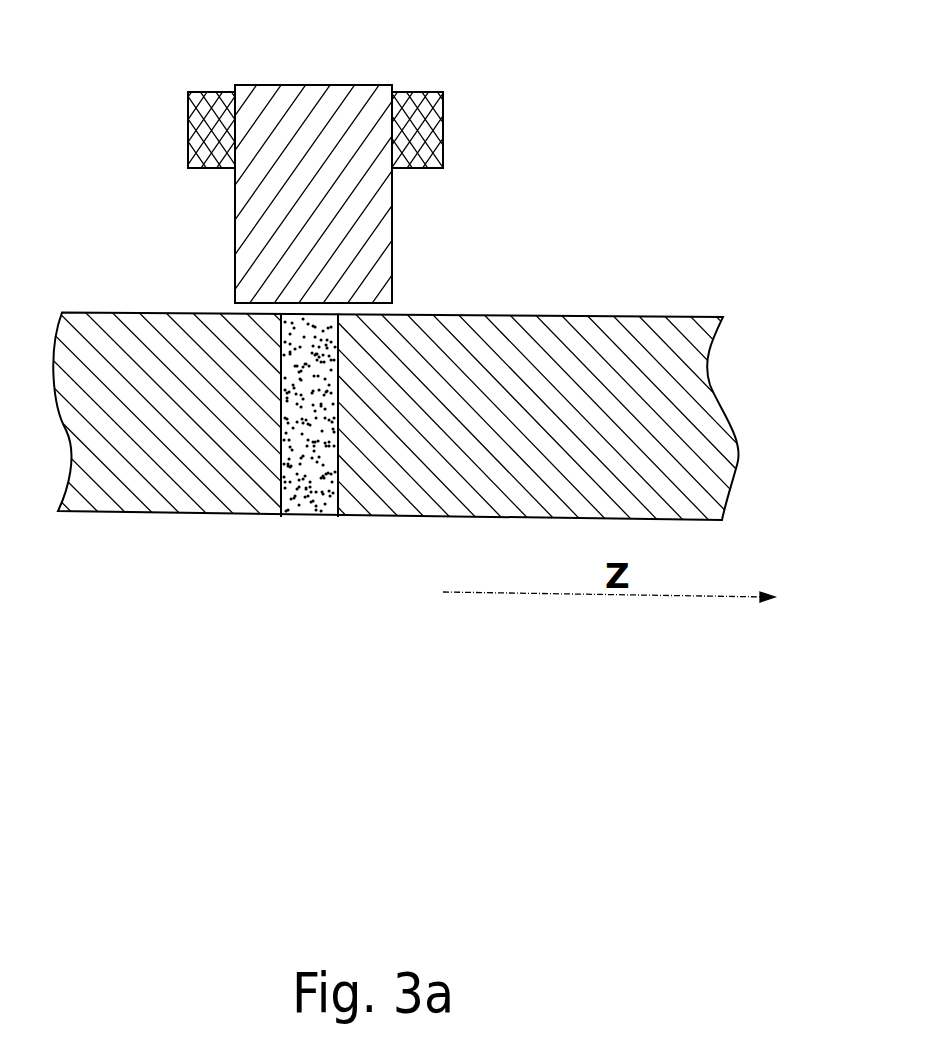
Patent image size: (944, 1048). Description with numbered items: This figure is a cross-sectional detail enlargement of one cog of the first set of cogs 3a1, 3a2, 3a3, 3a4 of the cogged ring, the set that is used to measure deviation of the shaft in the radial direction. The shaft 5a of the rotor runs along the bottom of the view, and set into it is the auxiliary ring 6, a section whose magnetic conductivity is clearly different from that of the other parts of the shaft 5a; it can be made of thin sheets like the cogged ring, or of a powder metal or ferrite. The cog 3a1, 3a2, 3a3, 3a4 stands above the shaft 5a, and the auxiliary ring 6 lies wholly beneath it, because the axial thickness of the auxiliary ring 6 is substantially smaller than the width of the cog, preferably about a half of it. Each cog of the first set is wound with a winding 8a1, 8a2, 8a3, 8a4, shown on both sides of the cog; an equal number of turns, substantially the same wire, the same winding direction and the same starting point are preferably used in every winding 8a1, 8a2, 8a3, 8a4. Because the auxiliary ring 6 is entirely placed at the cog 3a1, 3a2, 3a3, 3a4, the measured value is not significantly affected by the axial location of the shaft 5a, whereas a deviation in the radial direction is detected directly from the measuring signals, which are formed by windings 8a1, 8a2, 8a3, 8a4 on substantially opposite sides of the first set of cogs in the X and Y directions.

The winding 8a1 is at (498, 108).
The winding 8a2 is at (498, 108).
The winding 8a3 is at (498, 108).
The winding 8a4 is at (443, 120).
The cog of the first set 3a1 is at (447, 195).
The cog of the first set 3a2 is at (447, 195).
The cog of the first set 3a3 is at (447, 195).
The cog of the first set 3a4 is at (392, 217).
The auxiliary ring 6 is at (325, 516).
The shaft 5a is at (412, 516).